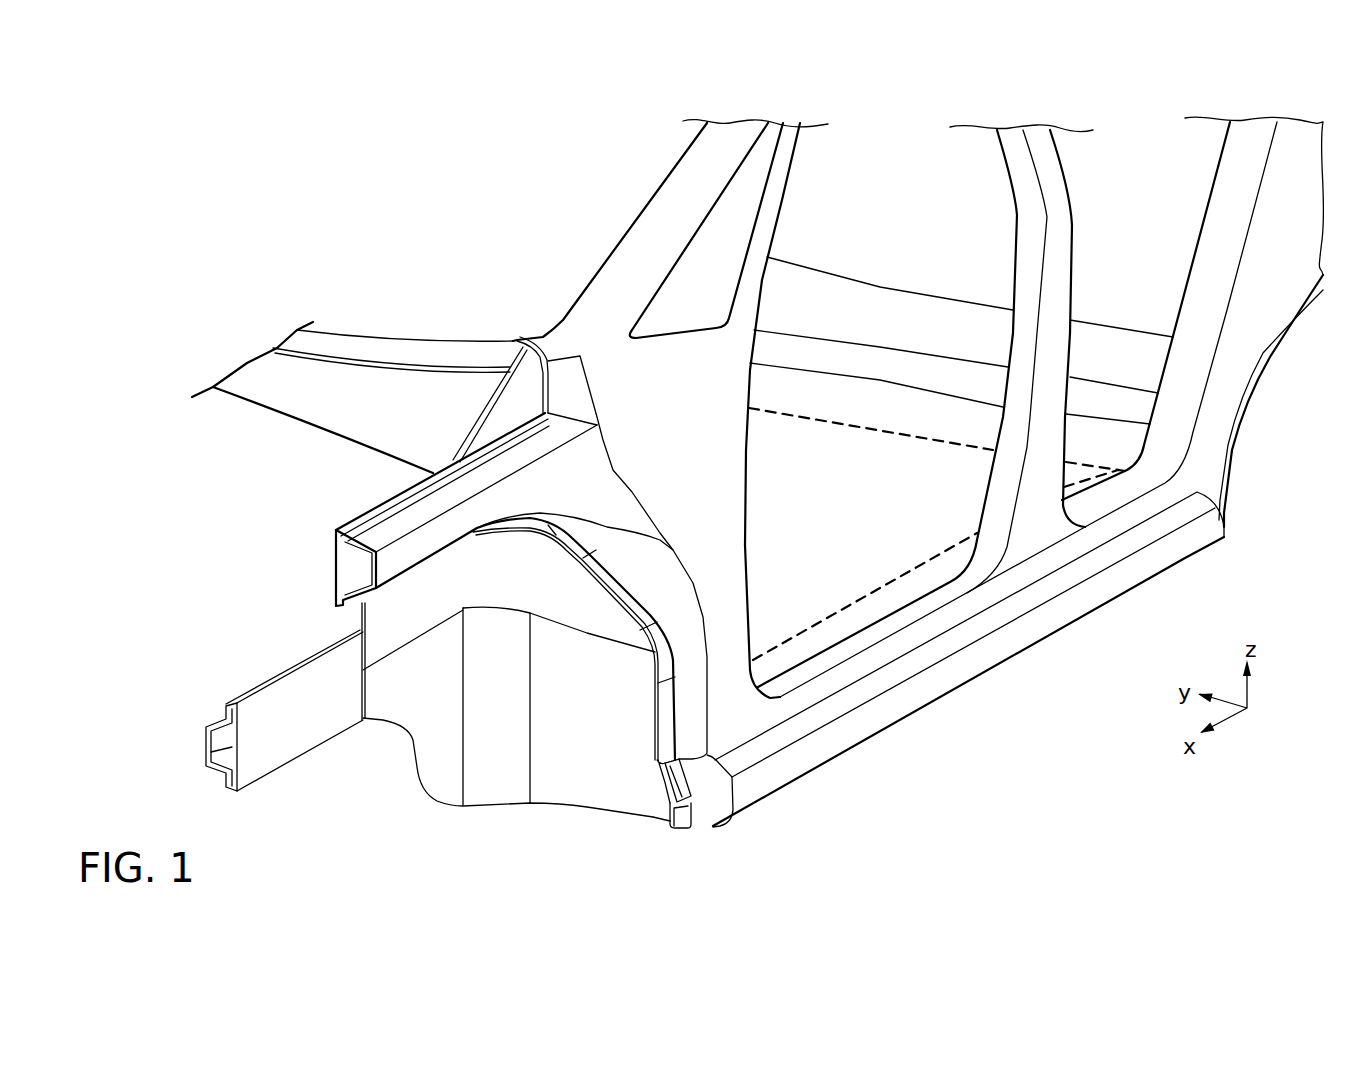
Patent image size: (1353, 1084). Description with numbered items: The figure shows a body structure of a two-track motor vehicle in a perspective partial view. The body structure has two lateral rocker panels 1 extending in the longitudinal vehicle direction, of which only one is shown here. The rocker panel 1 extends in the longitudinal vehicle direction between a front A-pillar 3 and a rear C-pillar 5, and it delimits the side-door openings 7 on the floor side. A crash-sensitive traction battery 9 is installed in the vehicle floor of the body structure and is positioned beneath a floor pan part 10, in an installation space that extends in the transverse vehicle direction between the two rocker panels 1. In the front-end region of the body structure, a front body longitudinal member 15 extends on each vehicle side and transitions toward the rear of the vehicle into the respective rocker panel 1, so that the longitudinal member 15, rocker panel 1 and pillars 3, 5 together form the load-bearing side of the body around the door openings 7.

The rocker panel 1 is at (861, 738).
The front A-pillar 3 is at (688, 435).
The rear C-pillar 5 is at (1272, 309).
The side-door opening 7 is at (1073, 272).
The traction battery 9 is at (903, 572).
The floor pan part 10 is at (856, 479).
The front body longitudinal member 15 is at (206, 746).